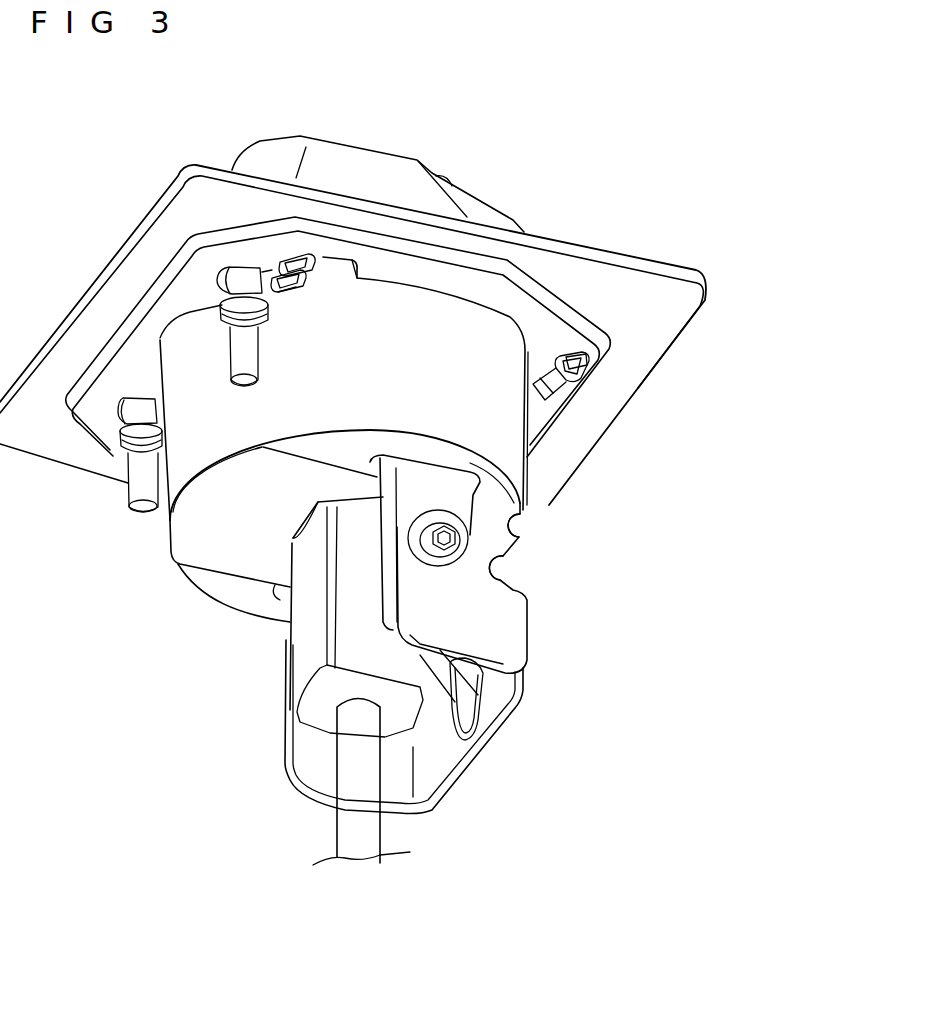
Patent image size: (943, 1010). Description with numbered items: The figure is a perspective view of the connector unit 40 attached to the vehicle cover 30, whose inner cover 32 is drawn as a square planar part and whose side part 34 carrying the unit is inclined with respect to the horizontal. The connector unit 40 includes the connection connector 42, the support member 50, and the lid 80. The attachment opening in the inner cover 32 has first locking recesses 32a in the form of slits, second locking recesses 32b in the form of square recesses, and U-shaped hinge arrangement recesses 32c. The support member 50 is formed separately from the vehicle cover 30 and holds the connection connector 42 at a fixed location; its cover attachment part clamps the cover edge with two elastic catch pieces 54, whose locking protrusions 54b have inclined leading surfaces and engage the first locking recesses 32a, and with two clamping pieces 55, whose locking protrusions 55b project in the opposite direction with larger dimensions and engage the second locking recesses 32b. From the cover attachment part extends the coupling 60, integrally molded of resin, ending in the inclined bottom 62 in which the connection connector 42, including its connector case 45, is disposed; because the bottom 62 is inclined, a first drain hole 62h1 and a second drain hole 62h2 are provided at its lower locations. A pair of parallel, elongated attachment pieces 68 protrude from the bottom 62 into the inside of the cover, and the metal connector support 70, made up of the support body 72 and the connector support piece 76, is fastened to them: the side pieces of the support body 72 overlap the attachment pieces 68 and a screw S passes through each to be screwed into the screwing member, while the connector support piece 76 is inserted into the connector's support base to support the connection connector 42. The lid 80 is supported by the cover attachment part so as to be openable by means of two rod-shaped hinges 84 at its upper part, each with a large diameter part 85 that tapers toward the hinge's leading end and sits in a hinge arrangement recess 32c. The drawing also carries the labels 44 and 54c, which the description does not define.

The vehicle cover 30 is at (395, 335).
The inner cover 32 is at (338, 337).
The side part 34 is at (353, 335).
The first locking recess 32a is at (573, 362).
The second locking recess 32b is at (325, 258).
The hinge arrangement recess 32c is at (243, 265).
The connector unit 40 is at (565, 158).
The connection connector 42 is at (285, 565).
The cable 44 is at (336, 824).
The connector case 45 is at (305, 633).
The support member 50 is at (162, 525).
The elastic catch piece 54 is at (614, 409).
The locking protrusion 54b is at (580, 390).
The housing cylindrical wall end face 54c is at (345, 456).
The clamping piece 55 is at (285, 258).
The locking protrusion 55b is at (284, 294).
The coupling 60 is at (344, 388).
The bottom 62 is at (355, 560).
The first drain hole 62h1 is at (500, 570).
The second drain hole 62h2 is at (522, 525).
The attachment piece 68 is at (428, 478).
The connector support 70 is at (438, 727).
The support body 72 is at (500, 710).
The connector support piece 76 is at (482, 727).
The lid 80 is at (372, 152).
The hinge 84 is at (228, 373).
The large diameter part 85 is at (214, 313).
The screw S is at (439, 561).